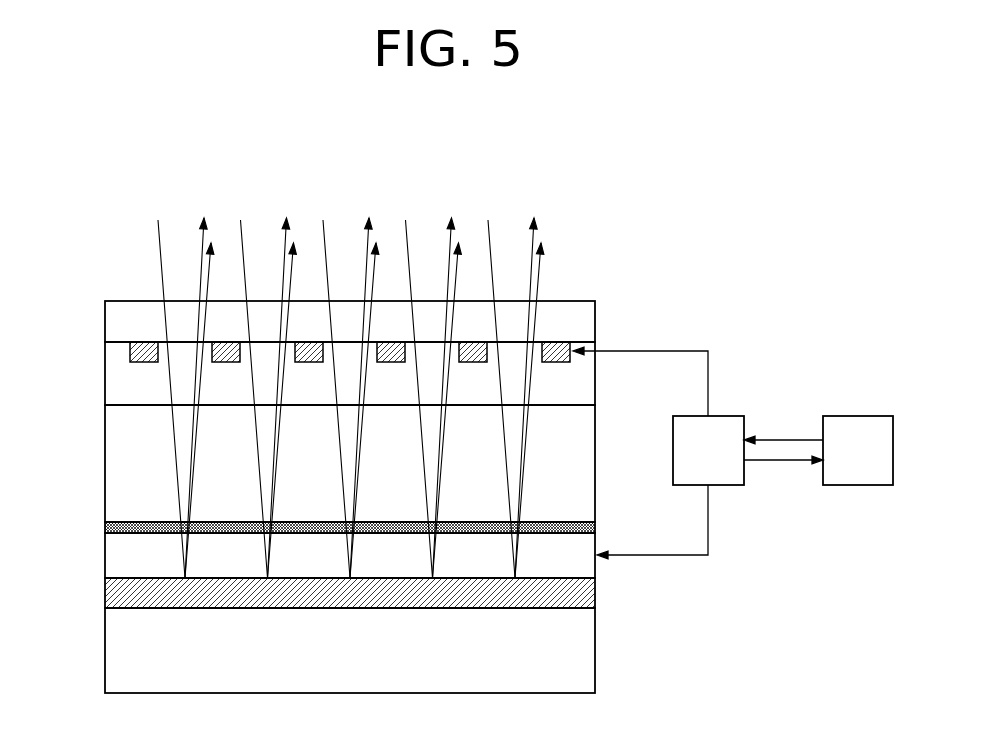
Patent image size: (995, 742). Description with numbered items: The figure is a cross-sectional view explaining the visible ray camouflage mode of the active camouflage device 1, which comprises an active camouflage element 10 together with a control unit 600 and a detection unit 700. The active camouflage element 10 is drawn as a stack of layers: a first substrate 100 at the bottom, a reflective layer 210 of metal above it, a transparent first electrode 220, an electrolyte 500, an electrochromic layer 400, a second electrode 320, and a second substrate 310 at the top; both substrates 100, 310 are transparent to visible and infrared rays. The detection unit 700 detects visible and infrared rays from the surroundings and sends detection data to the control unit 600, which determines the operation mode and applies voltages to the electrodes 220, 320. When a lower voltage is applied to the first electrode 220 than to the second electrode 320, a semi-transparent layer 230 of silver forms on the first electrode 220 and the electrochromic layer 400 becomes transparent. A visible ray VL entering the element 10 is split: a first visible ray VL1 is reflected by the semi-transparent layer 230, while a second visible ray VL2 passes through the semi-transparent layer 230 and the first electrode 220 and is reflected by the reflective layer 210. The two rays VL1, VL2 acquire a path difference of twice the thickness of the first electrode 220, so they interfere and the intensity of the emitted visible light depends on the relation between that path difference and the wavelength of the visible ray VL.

The active camouflage device 1 is at (681, 184).
The active camouflage element 10 is at (568, 288).
The first substrate 100 is at (112, 655).
The reflective layer 210 is at (108, 585).
The first electrode 220 is at (112, 556).
The semi-transparent layer 230 is at (108, 527).
The second substrate 310 is at (112, 321).
The second electrode 320 is at (124, 346).
The electrochromic layer 400 is at (112, 384).
The electrolyte 500 is at (112, 474).
The control unit 600 is at (725, 414).
The detection unit 700 is at (860, 414).
The visible ray VL is at (156, 240).
The first visible ray VL1 is at (193, 238).
The second visible ray VL2 is at (213, 268).